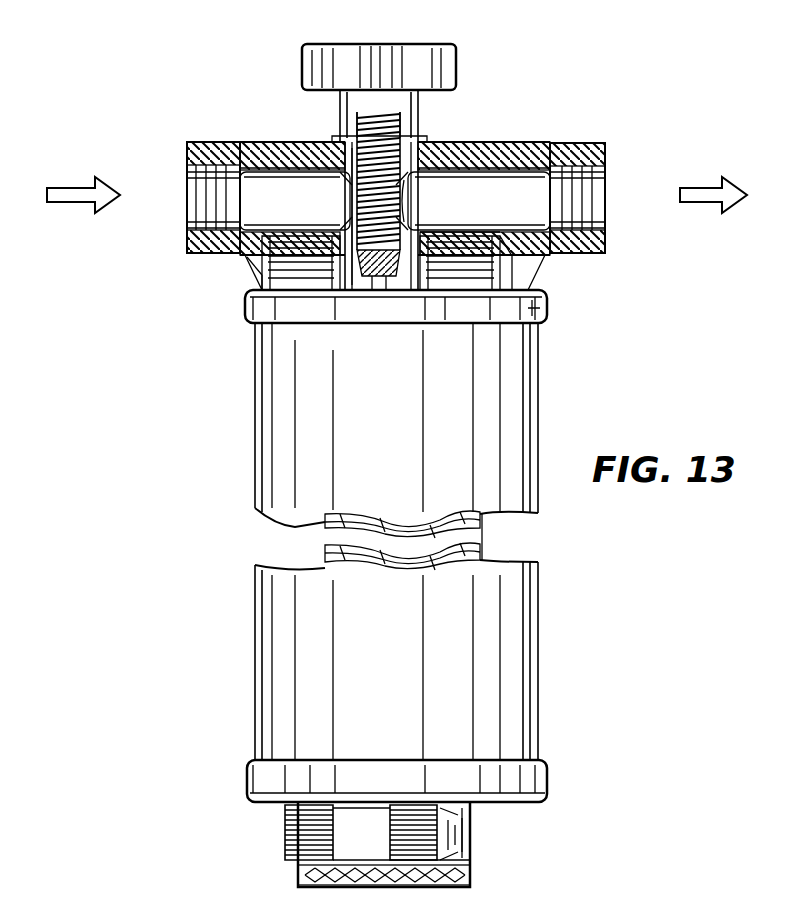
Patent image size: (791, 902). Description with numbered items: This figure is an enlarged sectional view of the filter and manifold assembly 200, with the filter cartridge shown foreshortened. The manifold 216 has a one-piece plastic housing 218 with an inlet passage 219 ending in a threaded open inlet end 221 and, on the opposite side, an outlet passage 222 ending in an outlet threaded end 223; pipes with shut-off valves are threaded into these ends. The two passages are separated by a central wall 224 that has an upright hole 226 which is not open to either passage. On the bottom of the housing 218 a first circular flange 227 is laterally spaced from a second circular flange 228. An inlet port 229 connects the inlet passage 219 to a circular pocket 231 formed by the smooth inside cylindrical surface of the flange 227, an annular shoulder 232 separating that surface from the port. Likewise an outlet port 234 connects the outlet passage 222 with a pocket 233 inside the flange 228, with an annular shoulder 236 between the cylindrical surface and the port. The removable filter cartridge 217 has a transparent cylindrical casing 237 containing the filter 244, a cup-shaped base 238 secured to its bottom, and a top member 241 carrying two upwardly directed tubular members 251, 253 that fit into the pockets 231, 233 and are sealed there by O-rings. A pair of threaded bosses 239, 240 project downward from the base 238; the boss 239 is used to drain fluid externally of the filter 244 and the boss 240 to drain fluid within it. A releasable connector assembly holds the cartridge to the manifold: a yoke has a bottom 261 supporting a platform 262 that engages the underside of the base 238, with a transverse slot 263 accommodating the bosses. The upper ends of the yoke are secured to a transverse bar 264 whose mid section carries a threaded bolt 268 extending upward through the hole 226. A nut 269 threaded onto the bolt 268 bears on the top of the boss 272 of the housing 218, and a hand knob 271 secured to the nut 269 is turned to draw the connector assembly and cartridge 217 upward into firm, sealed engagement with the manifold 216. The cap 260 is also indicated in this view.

The filter and manifold assembly 200 is at (574, 82).
The manifold 216 is at (238, 126).
The filter cartridge 217 is at (280, 447).
The housing 218 is at (496, 156).
The inlet passage 219 is at (302, 210).
The threaded open inlet end 221 is at (198, 186).
The outlet passage 222 is at (516, 210).
The outlet threaded end 223 is at (610, 178).
The central wall 224 is at (312, 152).
The upright hole 226 is at (422, 162).
The first circular flange 227 is at (252, 272).
The second circular flange 228 is at (496, 270).
The inlet port 229 is at (268, 256).
The pocket 231 is at (282, 285).
The annular shoulder 232 is at (330, 285).
The pocket 233 is at (442, 285).
The outlet port 234 is at (470, 231).
The annular shoulder 236 is at (468, 285).
The cylindrical casing 237 is at (495, 652).
The base 238 is at (520, 780).
The threaded boss 239 is at (288, 836).
The threaded boss 240 is at (440, 838).
The top member 241 is at (542, 308).
The filter 244 is at (490, 528).
The tubular member 251 is at (352, 288).
The tubular member 253 is at (462, 288).
The end cap 260 is at (512, 855).
The bottom 261 is at (372, 870).
The platform 262 is at (452, 812).
The transverse slot 263 is at (362, 808).
The transverse bar 264 is at (396, 306).
The bolt 268 is at (416, 192).
The nut 269 is at (350, 125).
The hand knob 271 is at (426, 58).
The boss 272 is at (405, 165).